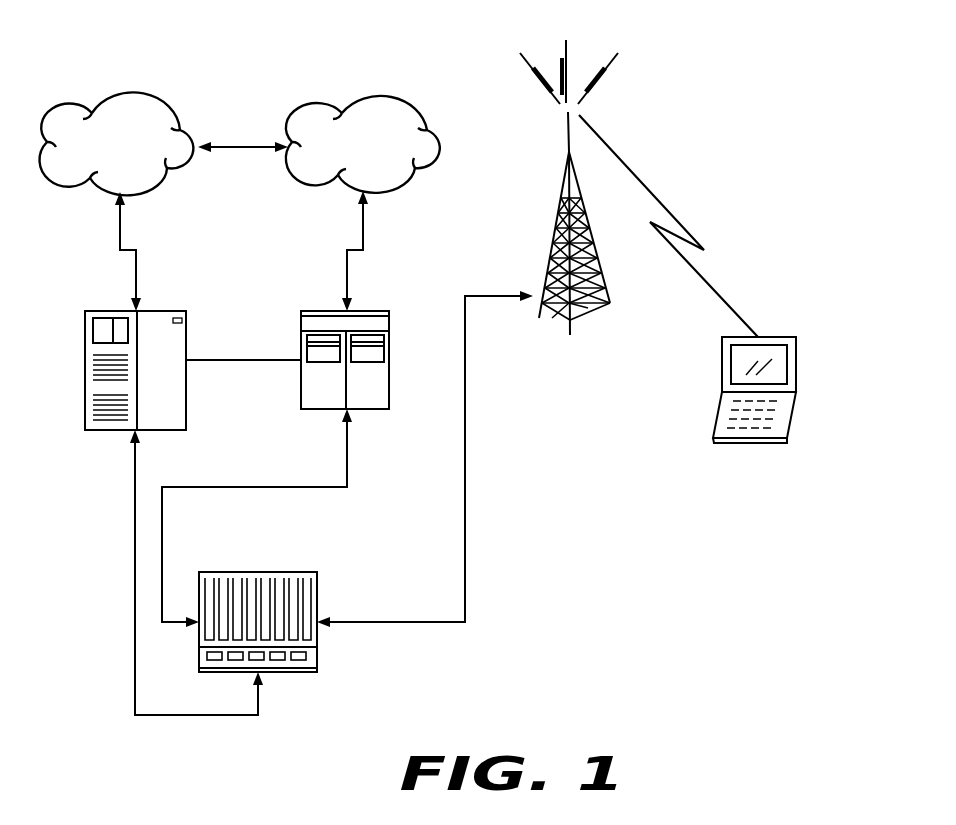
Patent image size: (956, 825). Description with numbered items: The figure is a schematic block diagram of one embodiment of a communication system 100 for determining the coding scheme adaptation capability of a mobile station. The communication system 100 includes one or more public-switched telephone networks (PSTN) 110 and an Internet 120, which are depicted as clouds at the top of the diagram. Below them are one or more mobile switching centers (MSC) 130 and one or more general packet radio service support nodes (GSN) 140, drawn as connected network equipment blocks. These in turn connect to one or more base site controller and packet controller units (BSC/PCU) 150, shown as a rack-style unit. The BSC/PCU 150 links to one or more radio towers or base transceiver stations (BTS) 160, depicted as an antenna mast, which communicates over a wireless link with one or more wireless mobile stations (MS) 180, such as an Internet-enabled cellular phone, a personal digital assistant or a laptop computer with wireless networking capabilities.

The communication system 100 is at (131, 32).
The public-switched telephone network 110 is at (155, 108).
The Internet 120 is at (403, 108).
The mobile switching center 130 is at (180, 311).
The general packet radio service support node 140 is at (381, 311).
The base site controller and packet controller unit 150 is at (311, 572).
The radio tower or base transceiver station 160 is at (604, 52).
The wireless mobile station 180 is at (788, 338).